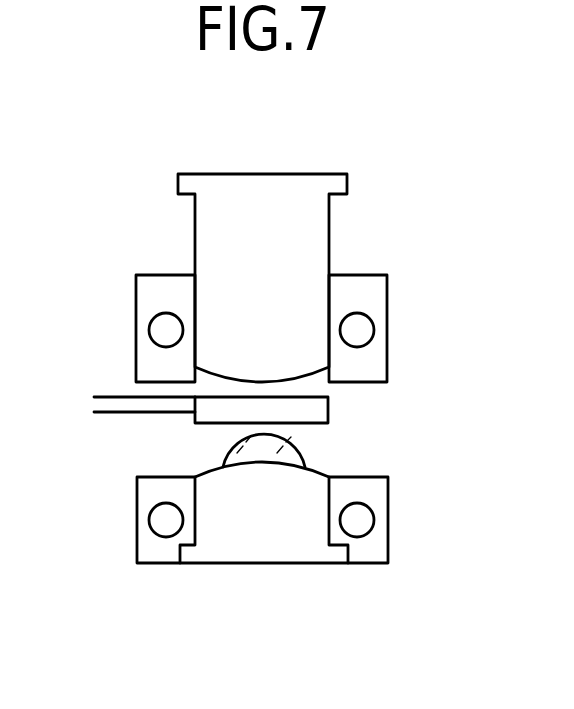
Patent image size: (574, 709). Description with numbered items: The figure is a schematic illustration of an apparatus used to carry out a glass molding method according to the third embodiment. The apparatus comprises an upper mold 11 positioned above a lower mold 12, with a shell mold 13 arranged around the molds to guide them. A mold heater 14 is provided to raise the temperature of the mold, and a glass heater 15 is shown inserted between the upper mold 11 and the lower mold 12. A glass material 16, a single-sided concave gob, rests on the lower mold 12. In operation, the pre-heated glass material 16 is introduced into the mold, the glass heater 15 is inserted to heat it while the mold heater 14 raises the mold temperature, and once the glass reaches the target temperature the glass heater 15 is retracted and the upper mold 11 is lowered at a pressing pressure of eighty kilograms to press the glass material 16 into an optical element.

The upper mold 11 is at (318, 225).
The lower mold 12 is at (267, 550).
The shell mold 13 is at (375, 367).
The mold heater 14 is at (363, 329).
The glass heater 15 is at (320, 408).
The glass material 16 is at (300, 454).